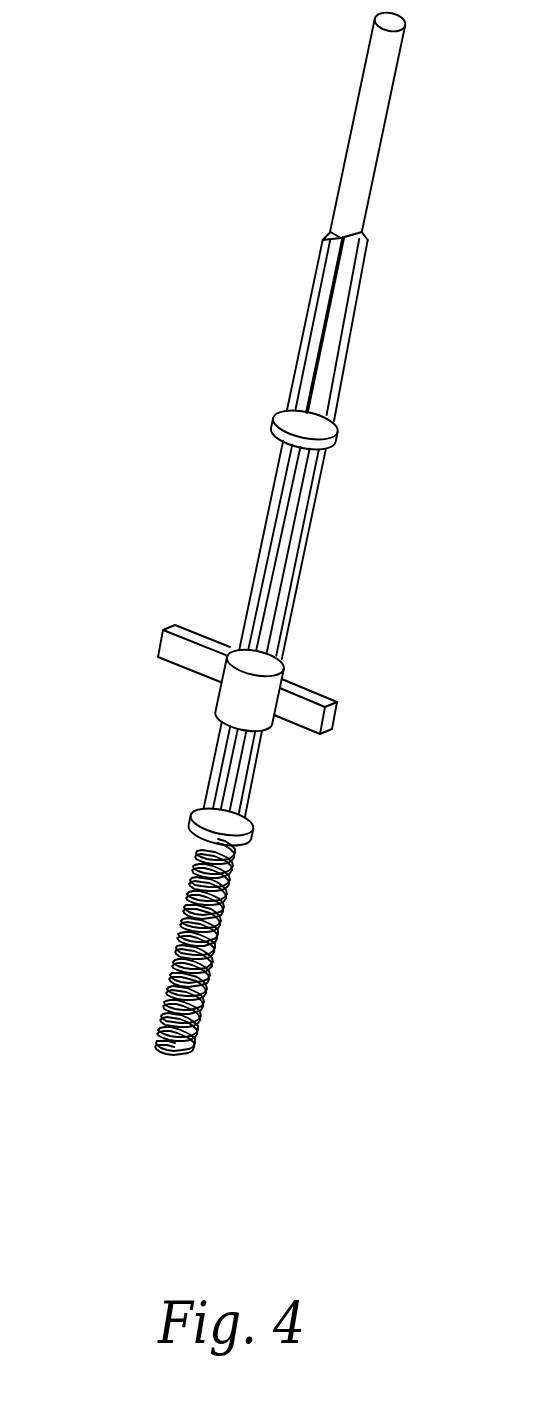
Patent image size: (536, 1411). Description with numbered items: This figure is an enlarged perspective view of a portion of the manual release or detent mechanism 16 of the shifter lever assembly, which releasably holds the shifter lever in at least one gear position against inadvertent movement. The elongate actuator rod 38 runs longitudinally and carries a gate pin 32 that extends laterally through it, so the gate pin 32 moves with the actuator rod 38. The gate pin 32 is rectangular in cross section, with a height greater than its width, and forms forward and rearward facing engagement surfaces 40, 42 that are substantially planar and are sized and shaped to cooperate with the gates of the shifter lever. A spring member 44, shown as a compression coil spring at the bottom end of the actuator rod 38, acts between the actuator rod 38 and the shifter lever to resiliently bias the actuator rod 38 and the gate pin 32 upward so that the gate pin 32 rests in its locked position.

The manual release or detent mechanism 16 is at (248, 532).
The gate pin 32 is at (311, 688).
The actuator rod 38 is at (300, 570).
The forward facing engagement surface 40 is at (300, 732).
The rearward facing engagement surface 42 is at (333, 723).
The spring member 44 is at (208, 970).